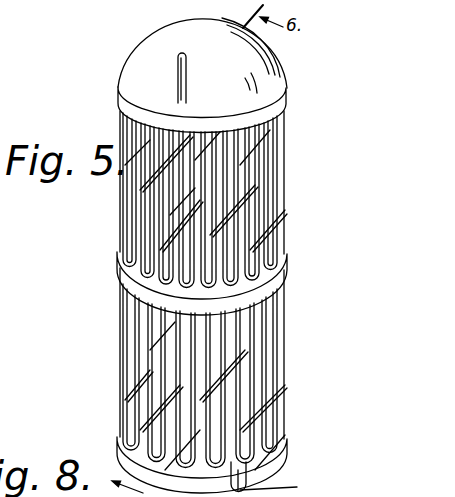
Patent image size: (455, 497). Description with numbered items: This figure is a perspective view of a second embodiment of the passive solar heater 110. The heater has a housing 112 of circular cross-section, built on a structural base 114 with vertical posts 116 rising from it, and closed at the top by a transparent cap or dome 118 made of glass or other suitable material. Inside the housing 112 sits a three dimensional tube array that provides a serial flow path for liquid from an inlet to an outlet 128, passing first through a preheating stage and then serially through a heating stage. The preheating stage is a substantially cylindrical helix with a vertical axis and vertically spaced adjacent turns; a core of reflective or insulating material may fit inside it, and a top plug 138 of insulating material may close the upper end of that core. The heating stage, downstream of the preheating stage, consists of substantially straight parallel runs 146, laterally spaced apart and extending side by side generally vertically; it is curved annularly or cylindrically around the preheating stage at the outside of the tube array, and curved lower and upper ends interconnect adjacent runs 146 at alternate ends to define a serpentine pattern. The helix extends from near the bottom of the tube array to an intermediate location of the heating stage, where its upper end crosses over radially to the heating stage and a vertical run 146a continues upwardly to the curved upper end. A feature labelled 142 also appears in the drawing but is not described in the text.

The passive solar heater 110 is at (283, 192).
The housing 112 is at (281, 331).
The structural base 114 is at (288, 463).
The vertical posts 116 is at (243, 384).
The transparent cap or dome 118 is at (272, 66).
The outlet 128 is at (178, 74).
The top plug 138 is at (287, 265).
The tab 142 is at (282, 476).
The straight parallel runs 146 is at (200, 377).
The vertical run 146a is at (165, 222).